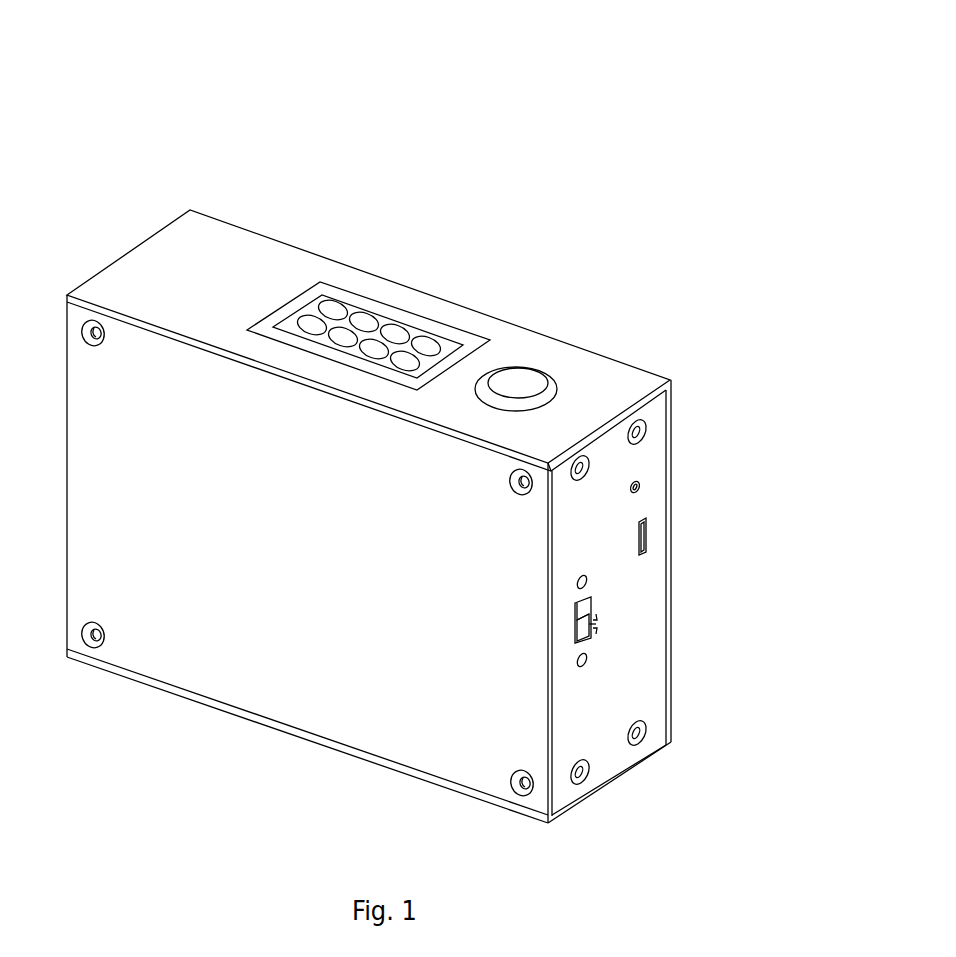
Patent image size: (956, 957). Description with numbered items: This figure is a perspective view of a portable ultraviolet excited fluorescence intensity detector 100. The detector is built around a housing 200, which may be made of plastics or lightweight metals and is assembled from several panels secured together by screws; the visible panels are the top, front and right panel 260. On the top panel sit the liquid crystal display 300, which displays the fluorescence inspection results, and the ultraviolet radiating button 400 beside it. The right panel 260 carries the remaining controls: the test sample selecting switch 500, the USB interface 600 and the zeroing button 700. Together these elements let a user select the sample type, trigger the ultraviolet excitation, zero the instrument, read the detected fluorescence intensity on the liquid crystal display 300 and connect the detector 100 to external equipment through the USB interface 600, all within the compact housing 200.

The portable ultraviolet excited fluorescence intensity detector 100 is at (401, 33).
The housing 200 is at (369, 516).
The right panel 260 is at (642, 623).
The liquid crystal display 300 is at (325, 288).
The ultraviolet radiating button 400 is at (521, 372).
The test sample selecting switch 500 is at (594, 627).
The USB interface 600 is at (646, 542).
The zeroing button 700 is at (640, 487).